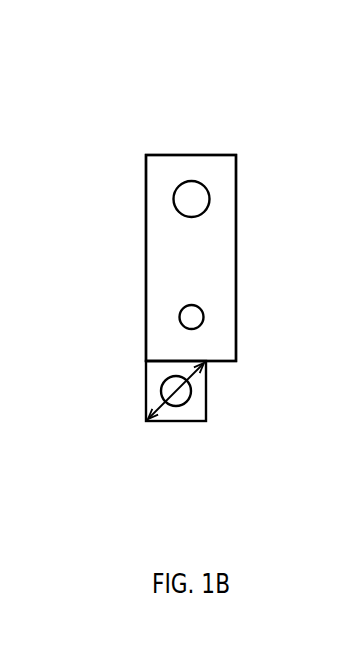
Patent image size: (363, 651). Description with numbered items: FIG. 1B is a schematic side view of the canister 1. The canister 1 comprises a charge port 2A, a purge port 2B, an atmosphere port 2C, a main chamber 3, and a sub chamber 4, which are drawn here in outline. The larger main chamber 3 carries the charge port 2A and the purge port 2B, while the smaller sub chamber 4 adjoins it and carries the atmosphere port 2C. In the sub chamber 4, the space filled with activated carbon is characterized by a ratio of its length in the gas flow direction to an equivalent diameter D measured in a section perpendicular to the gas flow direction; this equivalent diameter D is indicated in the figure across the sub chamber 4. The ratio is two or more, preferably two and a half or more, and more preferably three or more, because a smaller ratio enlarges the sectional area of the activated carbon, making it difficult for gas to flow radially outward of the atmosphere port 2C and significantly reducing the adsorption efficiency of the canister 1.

The canister 1 is at (197, 100).
The main chamber 3 is at (247, 240).
The sub chamber 4 is at (222, 395).
The charge port 2A is at (188, 198).
The purge port 2B is at (190, 317).
The atmosphere port 2C is at (176, 391).
The equivalent diameter D is at (164, 406).